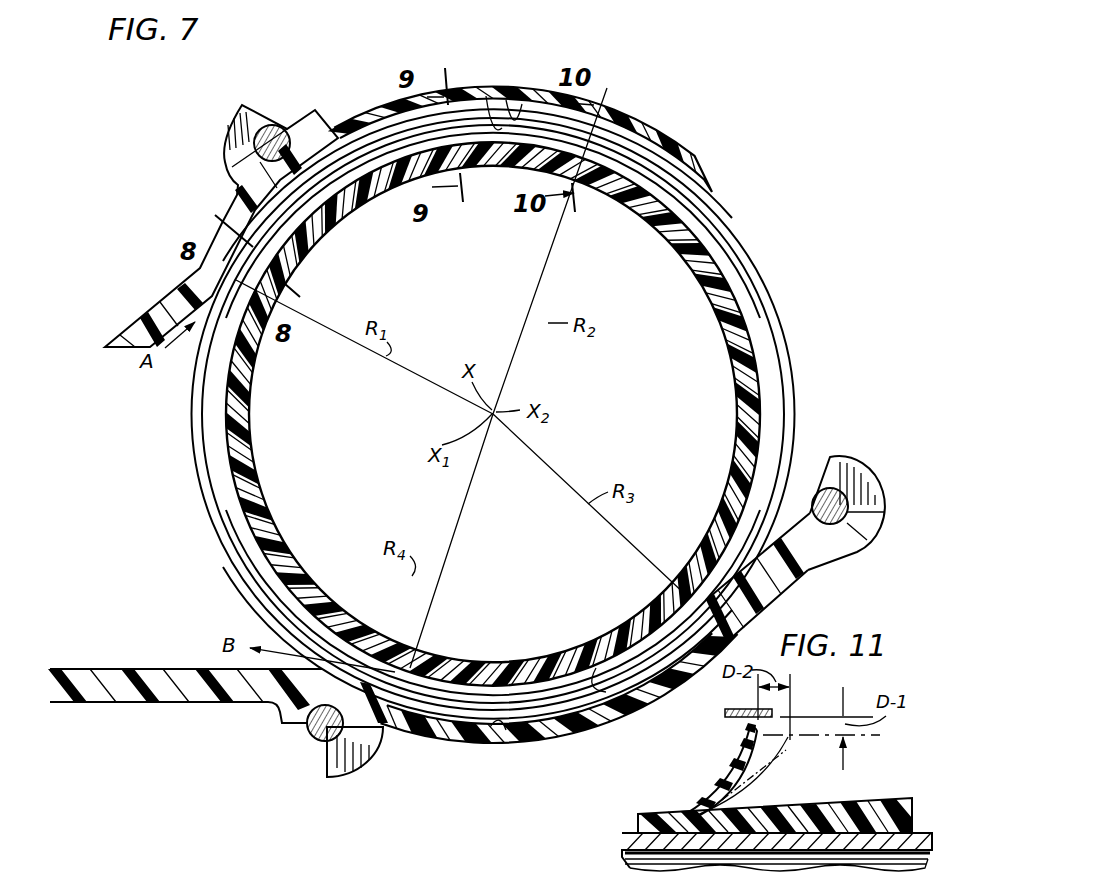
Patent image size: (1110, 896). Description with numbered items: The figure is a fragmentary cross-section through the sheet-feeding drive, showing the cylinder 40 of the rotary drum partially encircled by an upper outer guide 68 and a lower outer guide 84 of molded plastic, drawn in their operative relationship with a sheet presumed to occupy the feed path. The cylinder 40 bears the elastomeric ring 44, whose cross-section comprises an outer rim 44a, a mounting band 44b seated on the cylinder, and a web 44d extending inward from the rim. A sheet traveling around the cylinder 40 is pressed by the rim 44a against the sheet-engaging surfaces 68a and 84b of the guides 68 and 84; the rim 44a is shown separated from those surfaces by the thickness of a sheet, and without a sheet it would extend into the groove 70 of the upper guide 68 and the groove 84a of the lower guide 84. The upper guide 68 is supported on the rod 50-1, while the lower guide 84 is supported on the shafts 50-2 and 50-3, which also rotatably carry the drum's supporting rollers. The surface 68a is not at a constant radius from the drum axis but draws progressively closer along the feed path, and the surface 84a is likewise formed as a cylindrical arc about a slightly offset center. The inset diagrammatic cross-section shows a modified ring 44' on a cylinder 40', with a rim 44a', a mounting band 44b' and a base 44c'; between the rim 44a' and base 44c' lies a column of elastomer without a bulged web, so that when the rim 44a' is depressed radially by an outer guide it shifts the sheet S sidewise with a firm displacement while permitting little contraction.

In FIG. 7, the cylinder 40 is at (493, 414).
In FIG. 7, the elastomeric ring 44 is at (472, 413).
In FIG. 7, the rim 44a is at (476, 414).
In FIG. 7, the mounting band 44b is at (455, 414).
In FIG. 7, the web 44d is at (206, 424).
In FIG. 7, the outer guide 68 is at (385, 122).
In FIG. 7, the sheet-engaging surface 68a is at (493, 112).
In FIG. 7, the groove 70 is at (510, 118).
In FIG. 7, the outer guide segment 84 is at (569, 733).
In FIG. 7, the groove 84a is at (500, 736).
In FIG. 7, the sheet-engaging surface 84b is at (602, 676).
In FIG. 7, the rod 50-1 is at (276, 125).
In FIG. 7, the rod 50-2 is at (860, 556).
In FIG. 7, the rod 50-3 is at (318, 739).
In FIG. 11, the cylinder 40' is at (777, 816).
In FIG. 11, the ring 44' is at (688, 769).
In FIG. 11, the rim 44a' is at (730, 772).
In FIG. 11, the mounting band 44b' is at (775, 806).
In FIG. 11, the base 44c' is at (630, 813).
In FIG. 11, the sheet S is at (728, 709).